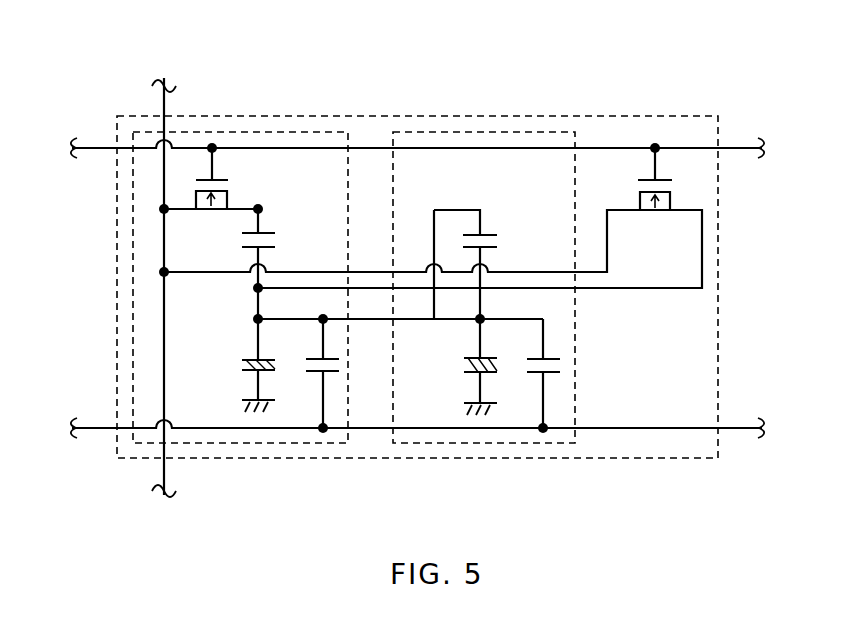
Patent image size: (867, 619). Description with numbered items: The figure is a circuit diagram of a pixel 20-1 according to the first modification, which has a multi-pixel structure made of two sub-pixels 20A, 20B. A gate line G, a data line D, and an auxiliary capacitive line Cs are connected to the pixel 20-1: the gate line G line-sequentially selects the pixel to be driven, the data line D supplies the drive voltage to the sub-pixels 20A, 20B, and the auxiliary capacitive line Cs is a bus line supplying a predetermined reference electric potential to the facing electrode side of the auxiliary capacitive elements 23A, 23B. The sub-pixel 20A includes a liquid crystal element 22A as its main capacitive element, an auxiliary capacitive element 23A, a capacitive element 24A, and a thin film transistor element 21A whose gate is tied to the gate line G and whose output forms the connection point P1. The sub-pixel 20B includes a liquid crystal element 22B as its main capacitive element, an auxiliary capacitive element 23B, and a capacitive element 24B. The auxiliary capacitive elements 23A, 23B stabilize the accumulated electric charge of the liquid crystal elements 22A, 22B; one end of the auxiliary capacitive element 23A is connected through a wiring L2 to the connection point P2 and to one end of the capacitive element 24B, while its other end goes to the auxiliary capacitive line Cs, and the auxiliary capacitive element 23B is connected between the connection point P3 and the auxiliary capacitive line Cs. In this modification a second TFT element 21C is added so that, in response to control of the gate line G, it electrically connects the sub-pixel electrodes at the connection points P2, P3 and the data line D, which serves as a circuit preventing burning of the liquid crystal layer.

The pixel 20-1 is at (368, 116).
The sub-pixel 20A is at (133, 230).
The sub-pixel 20B is at (576, 318).
The thin film transistor (TFT) element 21A is at (178, 190).
The TFT element 21C is at (678, 192).
The liquid crystal element 22A is at (238, 352).
The liquid crystal element 22B is at (498, 379).
The auxiliary capacitive element 23A is at (313, 378).
The auxiliary capacitive element 23B is at (562, 351).
The capacitive element 24A is at (268, 212).
The capacitive element 24B is at (491, 228).
The data line D is at (165, 106).
The gate line G is at (750, 147).
The auxiliary capacitive line Cs is at (760, 427).
The wiring L2 is at (368, 271).
The connection point P1 is at (255, 216).
The connection point P2 is at (256, 316).
The connection point P3 is at (476, 321).